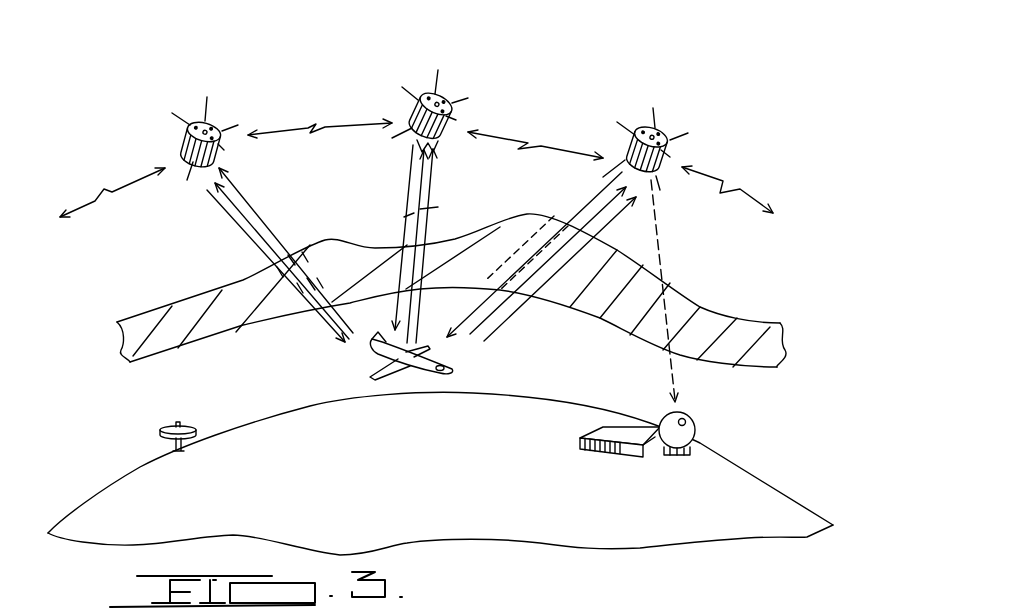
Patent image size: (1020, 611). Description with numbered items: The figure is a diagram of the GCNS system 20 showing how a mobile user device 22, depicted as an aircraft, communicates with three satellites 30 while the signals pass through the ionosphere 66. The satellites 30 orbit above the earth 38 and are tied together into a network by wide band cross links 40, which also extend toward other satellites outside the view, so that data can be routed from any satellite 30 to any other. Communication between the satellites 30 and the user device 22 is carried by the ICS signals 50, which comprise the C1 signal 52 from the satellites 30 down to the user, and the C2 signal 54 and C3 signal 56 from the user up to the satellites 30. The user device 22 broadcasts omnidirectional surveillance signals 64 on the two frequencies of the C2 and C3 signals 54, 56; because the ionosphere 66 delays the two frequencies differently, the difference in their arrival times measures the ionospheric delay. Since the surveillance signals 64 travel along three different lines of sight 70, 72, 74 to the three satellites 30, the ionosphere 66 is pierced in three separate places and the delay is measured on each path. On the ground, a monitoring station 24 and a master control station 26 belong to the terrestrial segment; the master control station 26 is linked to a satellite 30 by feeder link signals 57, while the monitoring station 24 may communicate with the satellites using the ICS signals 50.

The GCNS system 20 is at (563, 53).
The mobile user device 22 is at (418, 376).
The monitoring station 24 is at (183, 451).
The master control station 26 is at (658, 449).
The satellite 30 is at (197, 118).
The earth 38 is at (346, 483).
The wide band cross link 40 is at (97, 198).
The ICS signal 50 is at (249, 176).
The C1 signal 52 is at (221, 206).
The C2 signal 54 is at (245, 222).
The C3 signal 56 is at (266, 252).
The feeder link signal 57 is at (675, 390).
The surveillance signal 64 is at (271, 226).
The ionosphere 66 is at (788, 332).
The line of sight 70 is at (272, 201).
The line of sight 72 is at (396, 184).
The line of sight 74 is at (582, 203).